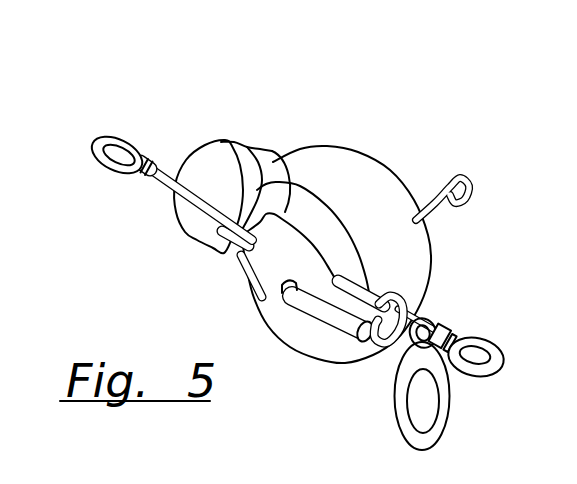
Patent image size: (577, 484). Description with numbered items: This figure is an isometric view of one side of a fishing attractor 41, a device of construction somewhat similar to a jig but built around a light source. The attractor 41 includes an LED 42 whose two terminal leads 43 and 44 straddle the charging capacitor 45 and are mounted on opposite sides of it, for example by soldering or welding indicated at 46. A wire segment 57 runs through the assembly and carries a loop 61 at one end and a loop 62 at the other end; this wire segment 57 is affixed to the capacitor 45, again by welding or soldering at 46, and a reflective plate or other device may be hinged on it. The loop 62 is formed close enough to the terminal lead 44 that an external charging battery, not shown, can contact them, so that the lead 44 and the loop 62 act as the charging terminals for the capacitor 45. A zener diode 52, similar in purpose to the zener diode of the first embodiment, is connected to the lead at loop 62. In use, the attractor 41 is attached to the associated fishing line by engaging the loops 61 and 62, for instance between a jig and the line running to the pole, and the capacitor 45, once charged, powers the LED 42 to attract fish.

The attractor 41 is at (376, 108).
The LED 42 is at (203, 142).
The terminal lead 43 is at (234, 247).
The terminal lead 44 is at (464, 211).
The charging capacitor 45 is at (387, 168).
The soldering or welding 46 is at (264, 293).
The zener diode 52 is at (340, 338).
The wire segment 57 is at (157, 187).
The loop 61 is at (105, 135).
The loop 62 is at (488, 338).